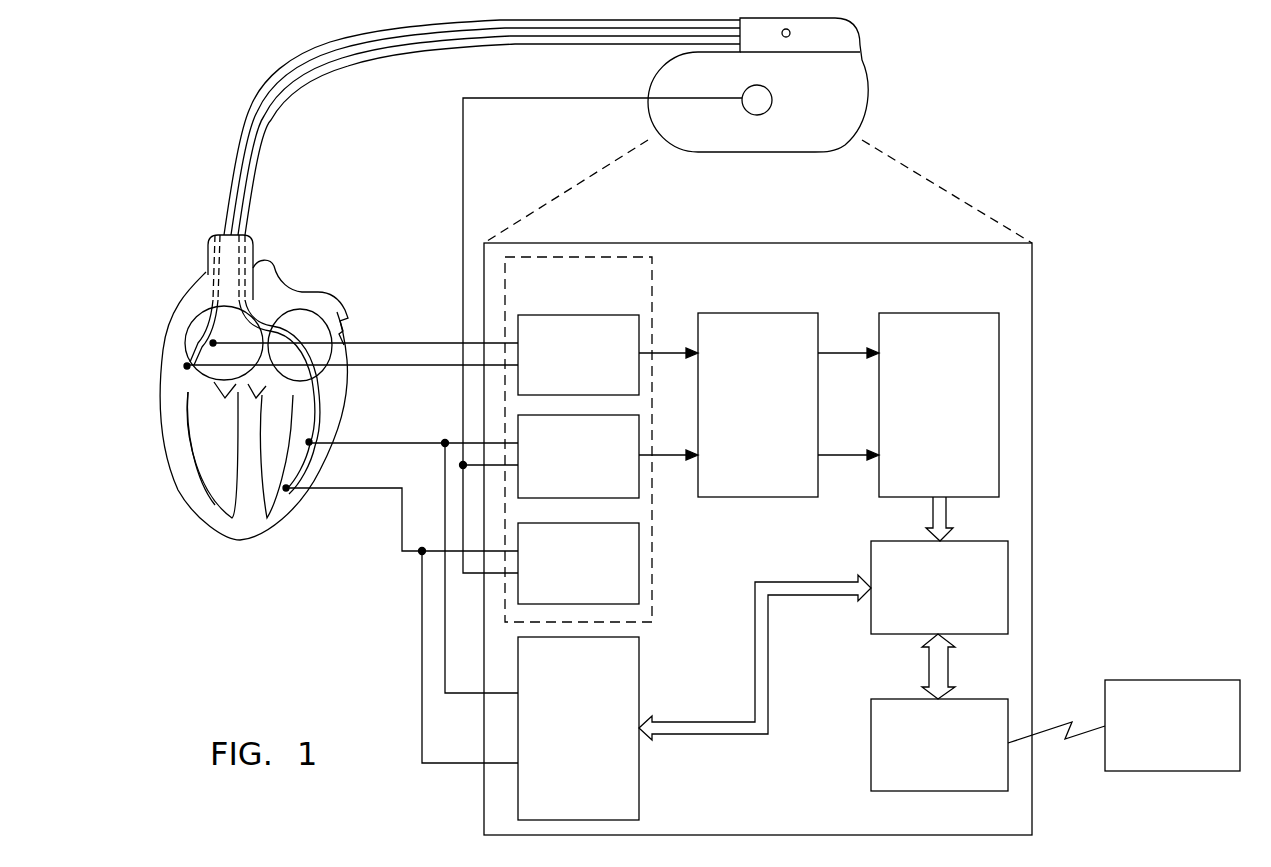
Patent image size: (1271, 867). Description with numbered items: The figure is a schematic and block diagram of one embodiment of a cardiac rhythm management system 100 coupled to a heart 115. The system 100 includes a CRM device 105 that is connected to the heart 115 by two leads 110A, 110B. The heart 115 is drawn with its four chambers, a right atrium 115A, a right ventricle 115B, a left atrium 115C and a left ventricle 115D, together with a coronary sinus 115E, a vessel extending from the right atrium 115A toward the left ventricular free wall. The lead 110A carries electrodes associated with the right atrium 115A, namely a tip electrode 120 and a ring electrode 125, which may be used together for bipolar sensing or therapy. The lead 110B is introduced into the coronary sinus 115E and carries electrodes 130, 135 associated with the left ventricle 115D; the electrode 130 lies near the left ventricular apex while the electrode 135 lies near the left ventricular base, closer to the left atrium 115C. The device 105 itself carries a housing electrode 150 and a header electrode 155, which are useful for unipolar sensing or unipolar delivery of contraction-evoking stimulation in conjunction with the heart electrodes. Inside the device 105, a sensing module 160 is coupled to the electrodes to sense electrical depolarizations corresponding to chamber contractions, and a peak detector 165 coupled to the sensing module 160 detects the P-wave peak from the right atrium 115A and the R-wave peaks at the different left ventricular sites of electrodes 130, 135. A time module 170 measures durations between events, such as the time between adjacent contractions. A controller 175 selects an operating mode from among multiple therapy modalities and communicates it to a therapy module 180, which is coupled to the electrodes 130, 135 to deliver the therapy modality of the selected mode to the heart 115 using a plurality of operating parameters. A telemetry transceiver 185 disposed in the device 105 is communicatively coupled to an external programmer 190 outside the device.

The CRM system 100 is at (318, 618).
The CRM device 105 is at (872, 98).
The lead 110A is at (278, 78).
The lead 110B is at (371, 60).
The heart 115 is at (237, 540).
The right atrium 115A is at (205, 335).
The right ventricle 115B is at (197, 433).
The left atrium 115C is at (303, 326).
The left ventricle 115D is at (290, 455).
The coronary sinus 115E is at (251, 273).
The tip electrode 120 is at (186, 368).
The ring electrode 125 is at (202, 344).
The electrode 130 is at (292, 493).
The electrode 135 is at (313, 441).
The housing electrode 150 is at (770, 108).
The header electrode 155 is at (788, 37).
The sensing module 160 is at (652, 280).
The peak detector 165 is at (756, 313).
The time module 170 is at (934, 313).
The controller 175 is at (961, 541).
The therapy module 180 is at (641, 677).
The telemetry transceiver 185 is at (961, 699).
The external programmer 190 is at (1196, 680).